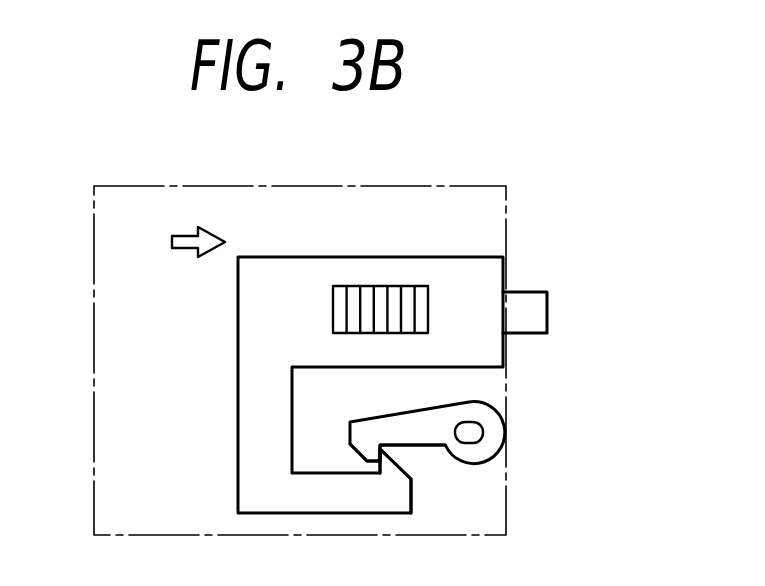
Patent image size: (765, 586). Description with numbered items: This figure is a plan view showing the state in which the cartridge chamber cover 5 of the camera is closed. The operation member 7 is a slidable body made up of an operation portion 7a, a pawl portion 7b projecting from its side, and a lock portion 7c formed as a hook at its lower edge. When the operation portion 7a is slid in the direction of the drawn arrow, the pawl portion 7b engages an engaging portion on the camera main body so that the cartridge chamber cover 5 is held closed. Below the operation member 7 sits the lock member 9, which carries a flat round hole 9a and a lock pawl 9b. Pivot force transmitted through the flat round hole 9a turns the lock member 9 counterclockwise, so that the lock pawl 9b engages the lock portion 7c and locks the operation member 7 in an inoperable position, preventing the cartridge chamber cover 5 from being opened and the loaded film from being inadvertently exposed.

The cartridge chamber cover 5 is at (310, 184).
The operation member 7 is at (260, 335).
The operation portion 7a is at (397, 290).
The pawl portion 7b is at (530, 313).
The lock portion 7c is at (373, 458).
The lock member 9 is at (477, 415).
The flat round hole 9a is at (475, 437).
The lock pawl 9b is at (382, 452).